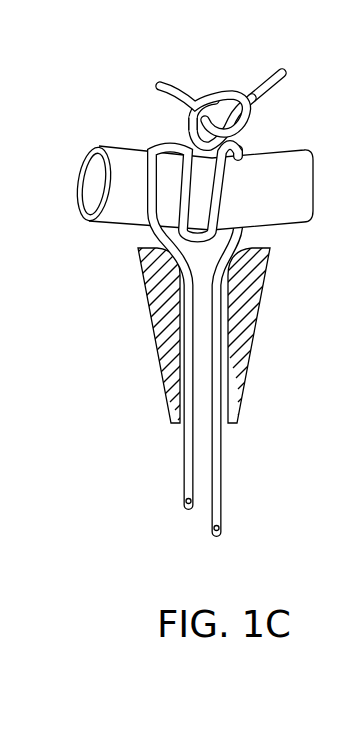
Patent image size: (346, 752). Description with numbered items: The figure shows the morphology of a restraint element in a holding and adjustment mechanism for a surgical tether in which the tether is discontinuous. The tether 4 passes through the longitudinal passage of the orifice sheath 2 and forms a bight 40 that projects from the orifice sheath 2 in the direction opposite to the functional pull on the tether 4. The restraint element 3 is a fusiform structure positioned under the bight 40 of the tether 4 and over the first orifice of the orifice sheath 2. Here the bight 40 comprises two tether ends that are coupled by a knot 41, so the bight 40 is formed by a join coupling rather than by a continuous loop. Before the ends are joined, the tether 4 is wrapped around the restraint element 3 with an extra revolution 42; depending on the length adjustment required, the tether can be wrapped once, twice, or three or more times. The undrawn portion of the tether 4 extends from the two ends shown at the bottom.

The orifice sheath 2 is at (157, 298).
The restraint element 3 is at (93, 182).
The tether 4 is at (268, 90).
The bight 40 is at (225, 88).
The knot 41 is at (191, 119).
The extra revolution 42 is at (184, 338).